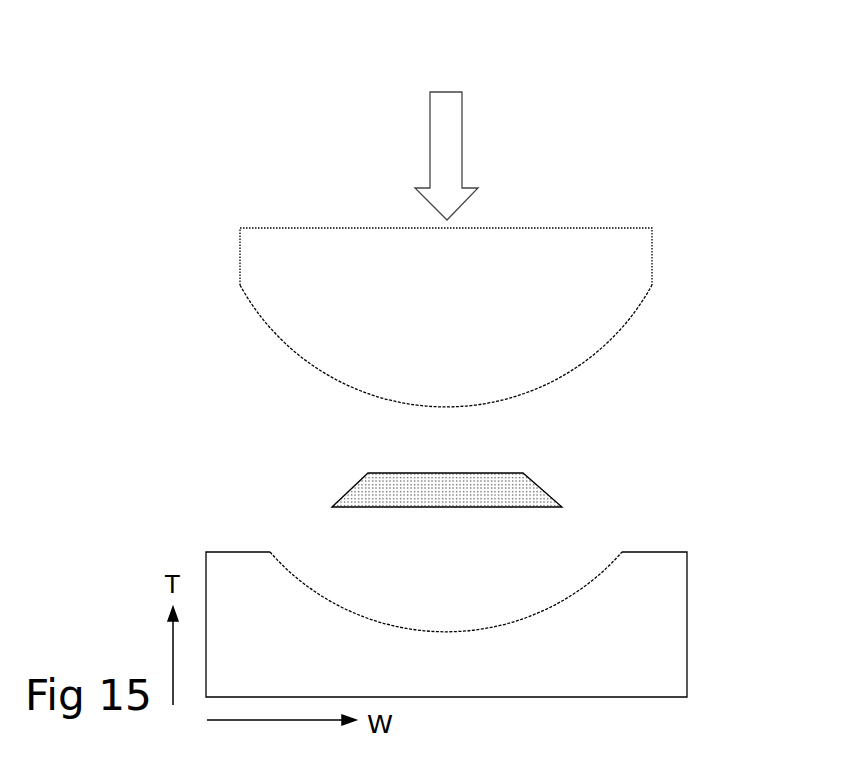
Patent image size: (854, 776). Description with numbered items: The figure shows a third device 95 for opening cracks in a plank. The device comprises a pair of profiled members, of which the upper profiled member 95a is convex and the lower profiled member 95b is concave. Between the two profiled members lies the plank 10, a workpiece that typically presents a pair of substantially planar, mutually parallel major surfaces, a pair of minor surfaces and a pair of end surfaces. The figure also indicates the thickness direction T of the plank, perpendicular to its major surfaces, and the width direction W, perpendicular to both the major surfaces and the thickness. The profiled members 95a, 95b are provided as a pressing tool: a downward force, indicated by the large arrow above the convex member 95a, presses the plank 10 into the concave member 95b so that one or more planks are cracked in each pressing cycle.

The third device 95 is at (650, 149).
The convex profiled member 95a is at (622, 258).
The plank 10 is at (530, 490).
The concave profiled member 95b is at (658, 603).